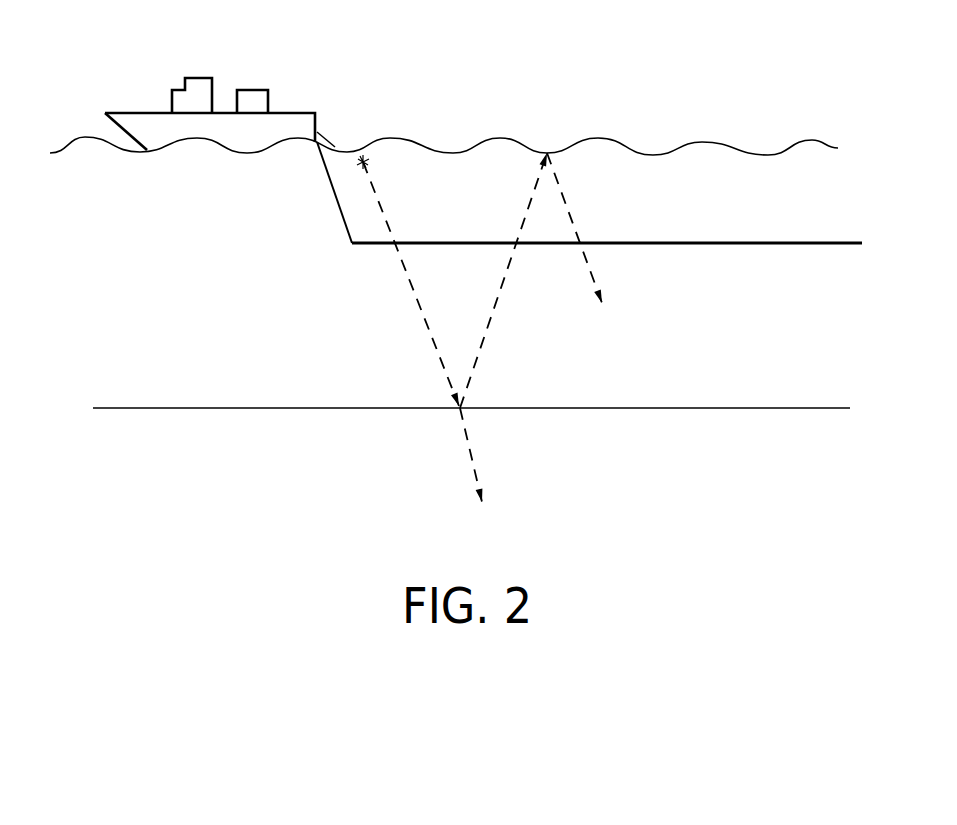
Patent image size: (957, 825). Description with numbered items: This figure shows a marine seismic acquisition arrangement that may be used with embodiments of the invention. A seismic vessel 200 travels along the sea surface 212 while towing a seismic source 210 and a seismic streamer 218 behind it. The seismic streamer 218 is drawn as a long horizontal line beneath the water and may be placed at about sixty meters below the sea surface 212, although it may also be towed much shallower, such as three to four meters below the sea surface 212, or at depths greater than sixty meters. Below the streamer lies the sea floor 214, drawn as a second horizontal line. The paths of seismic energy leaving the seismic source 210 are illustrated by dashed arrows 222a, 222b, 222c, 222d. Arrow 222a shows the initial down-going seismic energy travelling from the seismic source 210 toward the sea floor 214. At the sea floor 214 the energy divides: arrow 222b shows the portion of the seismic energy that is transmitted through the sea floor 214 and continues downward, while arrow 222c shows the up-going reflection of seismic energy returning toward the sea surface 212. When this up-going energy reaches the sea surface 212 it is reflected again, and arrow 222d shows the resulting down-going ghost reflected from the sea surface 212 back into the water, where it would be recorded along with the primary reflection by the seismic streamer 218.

The seismic vessel 200 is at (197, 97).
The seismic source 210 is at (360, 166).
The sea surface 212 is at (765, 155).
The sea floor 214 is at (780, 408).
The seismic streamer 218 is at (803, 242).
The arrow 222a is at (435, 343).
The arrow 222b is at (473, 459).
The arrow 222c is at (527, 213).
The arrow 222d is at (567, 198).